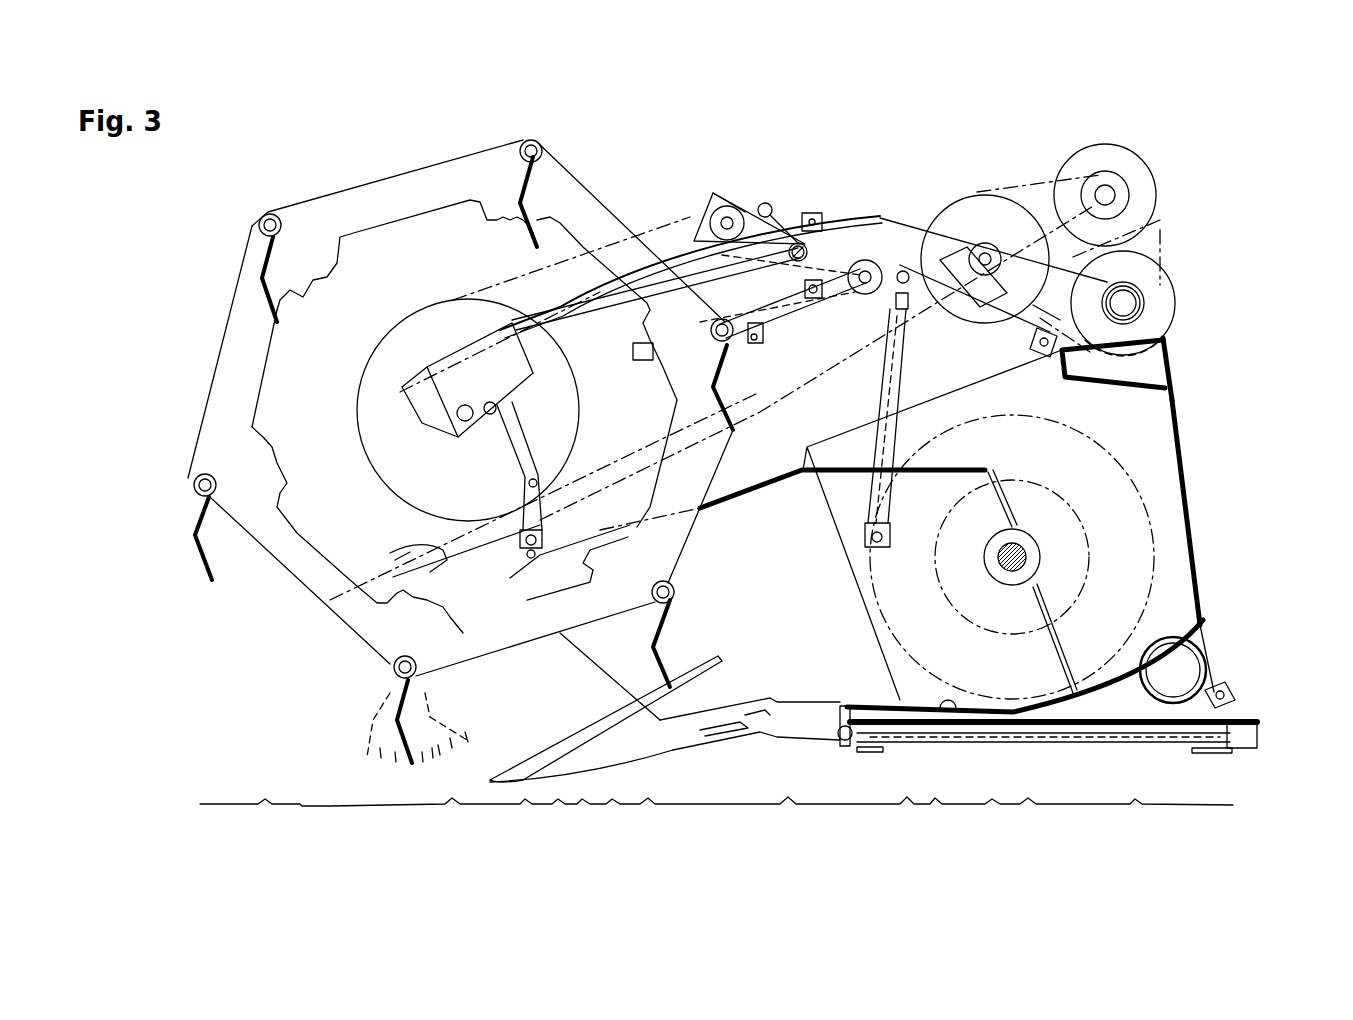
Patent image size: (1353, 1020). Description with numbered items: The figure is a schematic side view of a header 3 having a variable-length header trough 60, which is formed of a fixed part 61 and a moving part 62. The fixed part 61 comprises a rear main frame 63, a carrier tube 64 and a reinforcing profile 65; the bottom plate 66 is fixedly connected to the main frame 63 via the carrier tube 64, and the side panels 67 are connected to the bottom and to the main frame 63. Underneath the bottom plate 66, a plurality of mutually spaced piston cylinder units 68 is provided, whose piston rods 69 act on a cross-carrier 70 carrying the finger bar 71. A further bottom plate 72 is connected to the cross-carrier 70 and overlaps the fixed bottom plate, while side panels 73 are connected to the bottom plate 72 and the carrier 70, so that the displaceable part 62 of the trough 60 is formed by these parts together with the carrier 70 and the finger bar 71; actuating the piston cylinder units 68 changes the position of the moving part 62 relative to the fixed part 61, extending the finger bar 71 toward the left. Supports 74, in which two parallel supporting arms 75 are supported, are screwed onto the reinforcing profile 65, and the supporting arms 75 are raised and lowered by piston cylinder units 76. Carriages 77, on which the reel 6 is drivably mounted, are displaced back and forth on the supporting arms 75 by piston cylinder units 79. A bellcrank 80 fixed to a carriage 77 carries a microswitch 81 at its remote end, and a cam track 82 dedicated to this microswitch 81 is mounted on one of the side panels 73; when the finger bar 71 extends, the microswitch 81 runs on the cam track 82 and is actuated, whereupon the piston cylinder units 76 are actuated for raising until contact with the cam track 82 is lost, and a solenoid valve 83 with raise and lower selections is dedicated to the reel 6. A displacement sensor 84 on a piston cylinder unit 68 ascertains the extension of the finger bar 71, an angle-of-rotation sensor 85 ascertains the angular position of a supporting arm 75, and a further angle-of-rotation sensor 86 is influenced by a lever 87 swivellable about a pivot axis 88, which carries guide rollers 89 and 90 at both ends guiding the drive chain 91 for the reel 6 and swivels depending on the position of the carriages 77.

The header 3 is at (1163, 145).
The reel 6 is at (316, 186).
The header trough 60 is at (1204, 523).
The fixed part 61 is at (1180, 405).
The moving part 62 is at (758, 478).
The rear main frame 63 is at (1180, 372).
The carrier tube 64 is at (1183, 675).
The reinforcing profile 65 is at (1172, 332).
The bottom plate 66 is at (1108, 722).
The side panels 67 is at (1119, 445).
The piston cylinder units 68 is at (1018, 727).
The piston rods 69 is at (853, 745).
The cross-carrier 70 is at (818, 727).
The finger bar 71 is at (760, 740).
The bottom plate 72 is at (915, 727).
The side panels 73 is at (762, 598).
The supports 74 is at (1162, 278).
The supporting arms 75 is at (888, 240).
The piston cylinder units 76 is at (900, 362).
The carriages 77 is at (470, 372).
The piston cylinder units 79 is at (797, 318).
The bellcrank 80 is at (527, 490).
The microswitch 81 is at (512, 538).
The cam track 82 is at (420, 545).
The solenoid valve 83 is at (753, 346).
The displacement sensor 84 is at (1232, 698).
The angle-of-rotation sensor 85 is at (1027, 343).
The angle-of-rotation sensor 86 is at (811, 210).
The lever 87 is at (712, 194).
The pivot axis 88 is at (928, 222).
The guide roller 89 is at (858, 262).
The guide roller 90 is at (728, 207).
The drive chain 91 is at (668, 217).